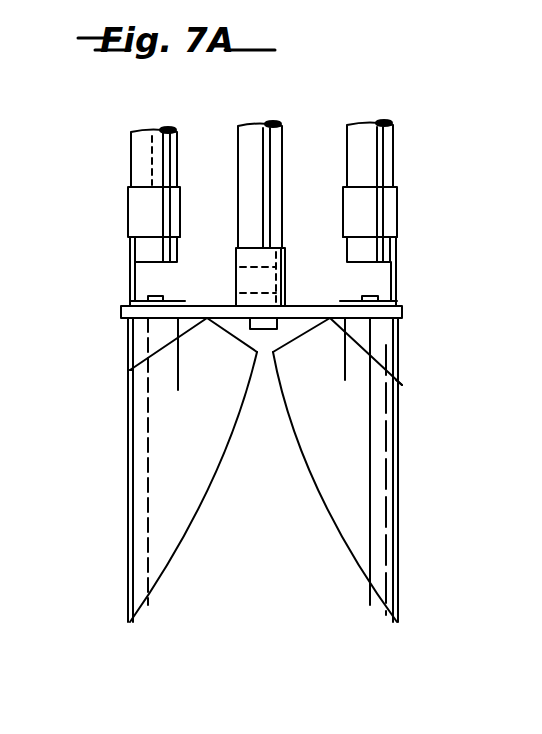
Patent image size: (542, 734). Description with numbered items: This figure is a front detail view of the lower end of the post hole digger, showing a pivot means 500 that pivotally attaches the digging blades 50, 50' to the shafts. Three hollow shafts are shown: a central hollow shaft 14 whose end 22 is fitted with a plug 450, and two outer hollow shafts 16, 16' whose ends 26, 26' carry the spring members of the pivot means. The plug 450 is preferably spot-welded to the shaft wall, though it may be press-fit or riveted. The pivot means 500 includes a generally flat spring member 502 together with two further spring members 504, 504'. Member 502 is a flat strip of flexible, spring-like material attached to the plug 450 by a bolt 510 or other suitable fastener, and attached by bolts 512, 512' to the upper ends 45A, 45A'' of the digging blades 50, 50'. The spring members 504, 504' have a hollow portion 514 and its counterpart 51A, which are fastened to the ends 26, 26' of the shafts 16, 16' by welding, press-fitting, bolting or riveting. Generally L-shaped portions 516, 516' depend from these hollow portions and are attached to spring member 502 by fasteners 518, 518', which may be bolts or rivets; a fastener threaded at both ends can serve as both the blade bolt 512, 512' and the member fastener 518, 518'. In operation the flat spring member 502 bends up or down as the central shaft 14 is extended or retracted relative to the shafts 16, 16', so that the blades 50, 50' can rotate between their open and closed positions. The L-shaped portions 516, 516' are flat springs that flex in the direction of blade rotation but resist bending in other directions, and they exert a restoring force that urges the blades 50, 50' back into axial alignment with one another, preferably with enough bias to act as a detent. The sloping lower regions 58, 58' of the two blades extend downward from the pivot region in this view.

The hollow shaft 14 is at (240, 141).
The hollow shaft 16 is at (128, 150).
The hollow shaft 16' is at (345, 148).
The end of hollow shaft 22 is at (283, 216).
The end of hollow shaft 26 is at (122, 203).
The end of hollow shaft 26' is at (394, 183).
The left blade edge 45A is at (88, 370).
The right blade edge 45A'' is at (435, 392).
The digging blade 50 is at (109, 470).
The digging blade 50' is at (408, 470).
The tube guide lines 51A is at (345, 215).
The left blade cutting edge 58 is at (193, 487).
The right blade cutting edge 58' is at (335, 487).
The plug 450 is at (234, 254).
The pivot means 500 is at (410, 192).
The spring member 502 is at (227, 320).
The spring member 504 is at (112, 263).
The spring member 504' is at (428, 271).
The bolt 510 is at (267, 330).
The bolt 512 is at (118, 354).
The bolt 512' is at (404, 349).
The hollow portion 514 is at (203, 184).
The L-shaped portion 516 is at (122, 281).
The L-shaped portion 516' is at (402, 284).
The fastener 518 is at (181, 285).
The fastener 518' is at (339, 285).